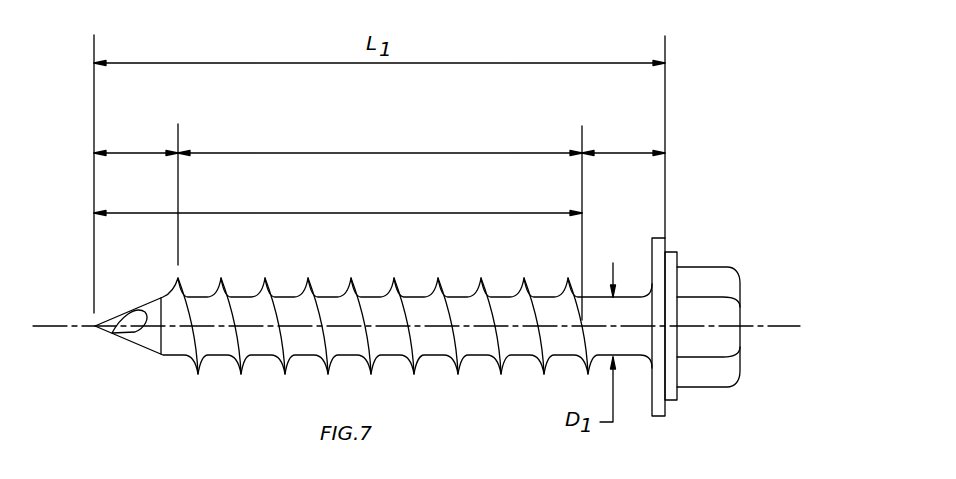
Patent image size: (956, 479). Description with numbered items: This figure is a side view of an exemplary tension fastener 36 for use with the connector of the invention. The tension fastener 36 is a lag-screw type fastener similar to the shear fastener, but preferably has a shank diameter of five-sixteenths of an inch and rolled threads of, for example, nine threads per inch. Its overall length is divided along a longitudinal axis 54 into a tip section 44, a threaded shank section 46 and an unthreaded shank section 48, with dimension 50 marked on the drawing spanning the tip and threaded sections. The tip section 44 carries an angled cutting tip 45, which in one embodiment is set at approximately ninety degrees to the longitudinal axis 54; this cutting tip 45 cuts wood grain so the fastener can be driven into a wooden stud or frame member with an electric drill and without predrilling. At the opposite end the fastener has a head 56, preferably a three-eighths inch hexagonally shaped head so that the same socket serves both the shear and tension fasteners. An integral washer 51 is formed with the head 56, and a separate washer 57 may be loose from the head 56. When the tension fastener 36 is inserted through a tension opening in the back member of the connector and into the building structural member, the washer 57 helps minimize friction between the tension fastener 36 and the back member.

The tension fastener 36 is at (765, 115).
The tip section 44 is at (136, 194).
The cutting tip 45 is at (115, 330).
The threaded shank section 46 is at (380, 221).
The unthreaded shank section 48 is at (623, 140).
The combined tip and thread length 50 is at (338, 199).
The integral washer 51 is at (677, 253).
The longitudinal axis 54 is at (58, 323).
The head 56 is at (741, 303).
The washer 57 is at (666, 238).